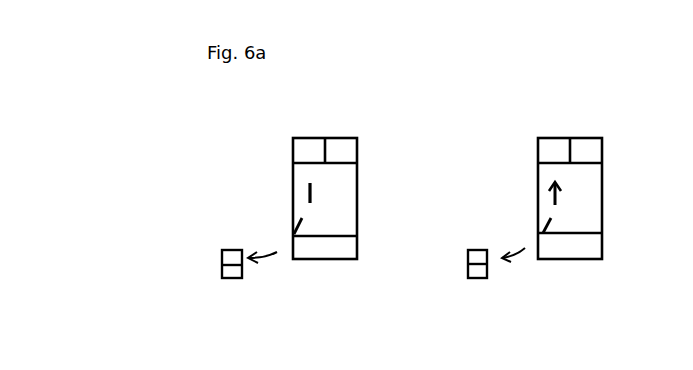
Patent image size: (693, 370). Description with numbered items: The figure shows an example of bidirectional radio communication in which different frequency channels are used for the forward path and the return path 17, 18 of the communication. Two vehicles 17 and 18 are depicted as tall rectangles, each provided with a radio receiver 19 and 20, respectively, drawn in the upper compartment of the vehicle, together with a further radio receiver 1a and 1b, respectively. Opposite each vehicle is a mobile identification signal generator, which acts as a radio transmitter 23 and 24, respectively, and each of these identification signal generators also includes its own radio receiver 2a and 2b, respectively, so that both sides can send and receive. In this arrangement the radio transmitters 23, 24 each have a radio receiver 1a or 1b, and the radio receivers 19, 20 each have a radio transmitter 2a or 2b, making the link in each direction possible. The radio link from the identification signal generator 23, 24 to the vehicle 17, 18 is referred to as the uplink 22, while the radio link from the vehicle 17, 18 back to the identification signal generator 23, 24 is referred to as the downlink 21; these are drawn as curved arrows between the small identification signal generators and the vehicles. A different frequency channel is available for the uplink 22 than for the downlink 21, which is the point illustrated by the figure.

The radio receiver 1a is at (310, 145).
The radio receiver 1b is at (553, 147).
The radio transmitter 2a is at (222, 250).
The radio transmitter 2b is at (468, 250).
The vehicle 17 is at (323, 194).
The vehicle 18 is at (566, 195).
The radio receiver 19 is at (337, 155).
The radio receiver 20 is at (583, 153).
The downlink 21 is at (270, 250).
The uplink 22 is at (517, 250).
The radio transmitter 23 is at (225, 277).
The radio transmitter 24 is at (470, 278).